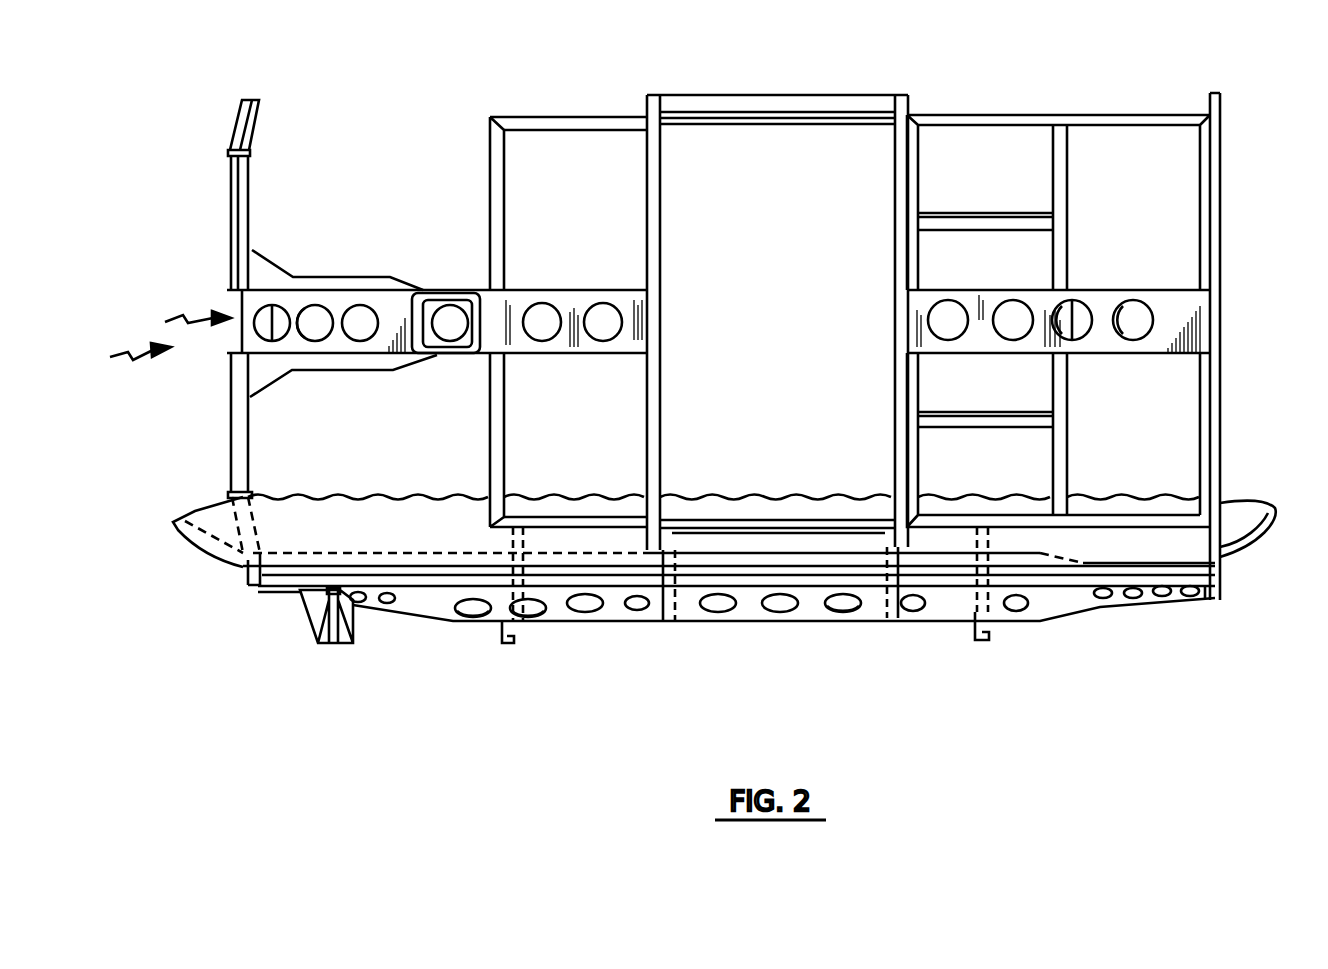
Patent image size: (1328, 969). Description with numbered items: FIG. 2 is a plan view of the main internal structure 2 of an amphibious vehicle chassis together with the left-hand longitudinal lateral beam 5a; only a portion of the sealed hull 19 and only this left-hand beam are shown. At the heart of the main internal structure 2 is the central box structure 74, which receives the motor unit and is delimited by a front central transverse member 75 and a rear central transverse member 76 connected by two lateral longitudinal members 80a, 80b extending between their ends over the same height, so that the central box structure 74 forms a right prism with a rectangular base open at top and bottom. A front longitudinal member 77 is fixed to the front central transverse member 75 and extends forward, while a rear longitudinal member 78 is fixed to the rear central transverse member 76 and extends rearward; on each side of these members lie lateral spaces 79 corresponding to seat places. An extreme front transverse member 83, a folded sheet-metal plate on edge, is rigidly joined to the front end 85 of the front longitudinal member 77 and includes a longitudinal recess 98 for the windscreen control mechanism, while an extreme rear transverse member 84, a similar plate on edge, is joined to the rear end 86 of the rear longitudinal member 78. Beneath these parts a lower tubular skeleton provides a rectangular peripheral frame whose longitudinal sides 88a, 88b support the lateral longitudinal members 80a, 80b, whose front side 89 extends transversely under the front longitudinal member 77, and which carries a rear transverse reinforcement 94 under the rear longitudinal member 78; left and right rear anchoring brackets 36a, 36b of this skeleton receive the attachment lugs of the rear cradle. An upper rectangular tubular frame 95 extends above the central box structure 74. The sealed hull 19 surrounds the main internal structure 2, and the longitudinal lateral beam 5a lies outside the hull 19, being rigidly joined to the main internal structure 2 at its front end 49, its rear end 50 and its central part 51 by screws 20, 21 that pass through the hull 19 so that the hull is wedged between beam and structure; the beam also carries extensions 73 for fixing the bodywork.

The main internal structure 2 is at (116, 360).
The left-hand longitudinal lateral beam 5a is at (1045, 606).
The sealed hull 19 is at (1237, 523).
The screw 20 is at (252, 583).
The screw 21 is at (518, 625).
The left rear anchoring bracket 36a is at (972, 420).
The right rear anchoring bracket 36b is at (975, 218).
The front end 49 is at (280, 588).
The rear end 50 is at (1205, 605).
The central part 51 is at (753, 612).
The extensions 73 is at (333, 645).
The central box structure 74 is at (777, 280).
The front central transverse member 75 is at (664, 188).
The rear central transverse member 76 is at (892, 190).
The front longitudinal member 77 is at (493, 335).
The rear longitudinal member 78 is at (1113, 300).
The lateral spaces 79 is at (562, 227).
The lateral longitudinal member 80a is at (742, 520).
The lateral longitudinal member 80b is at (803, 128).
The extreme front transverse member 83 is at (238, 245).
The extreme rear transverse member 84 is at (1220, 182).
The front end 85 is at (300, 300).
The rear end 86 is at (1195, 322).
The longitudinal side 88a is at (557, 527).
The longitudinal side 88b is at (528, 117).
The front side 89 is at (490, 158).
The rear transverse reinforcement 94 is at (1062, 158).
The upper rectangular tubular frame 95 is at (700, 103).
The longitudinal recess 98 is at (175, 315).